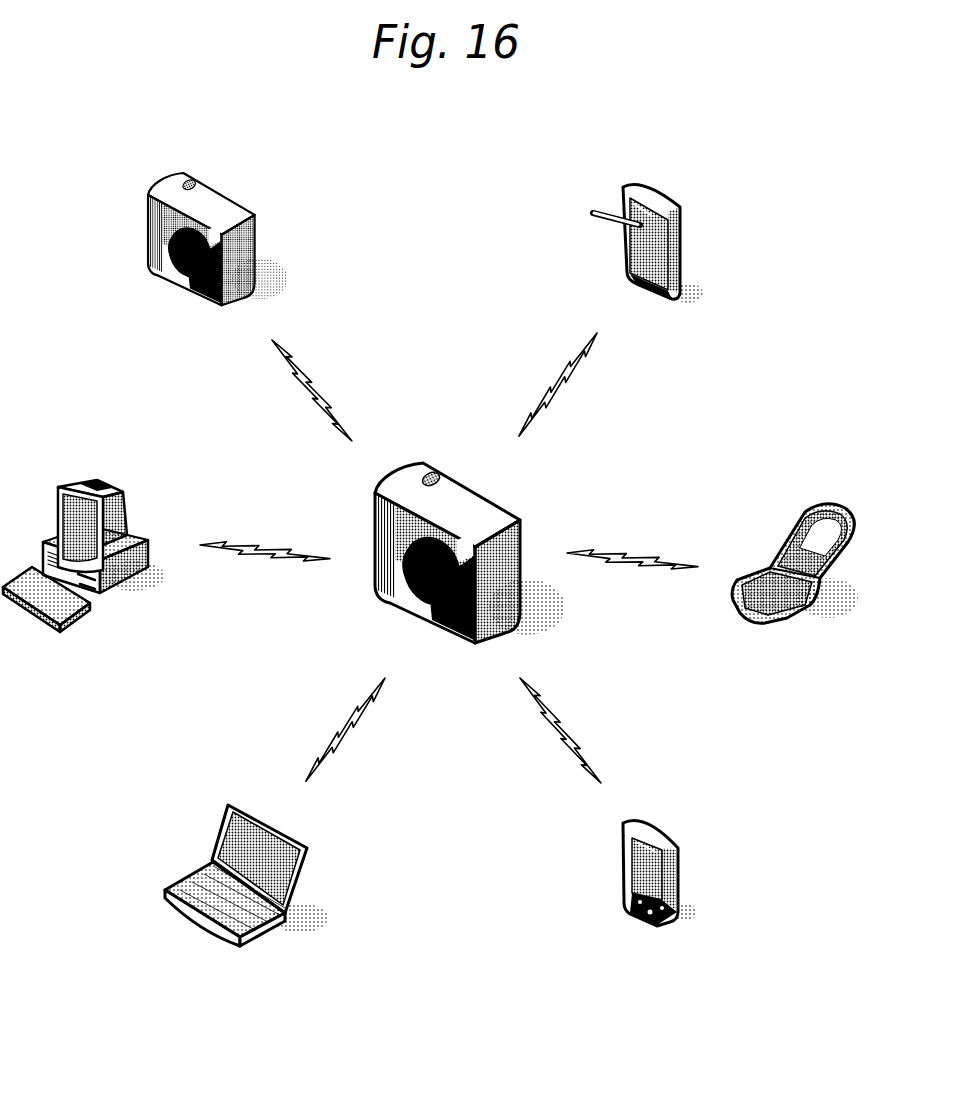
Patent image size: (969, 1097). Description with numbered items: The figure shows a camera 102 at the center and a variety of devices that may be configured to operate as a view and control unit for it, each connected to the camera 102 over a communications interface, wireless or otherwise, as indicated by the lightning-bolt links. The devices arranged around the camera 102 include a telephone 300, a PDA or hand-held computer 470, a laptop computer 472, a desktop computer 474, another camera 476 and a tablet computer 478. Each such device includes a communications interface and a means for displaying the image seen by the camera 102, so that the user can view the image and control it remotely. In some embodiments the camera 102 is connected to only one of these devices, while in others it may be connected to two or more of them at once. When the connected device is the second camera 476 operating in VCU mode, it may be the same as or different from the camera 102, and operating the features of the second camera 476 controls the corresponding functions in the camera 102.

The camera 102 is at (503, 515).
The second camera 476 is at (227, 203).
The tablet computer 478 is at (672, 202).
The desktop computer 474 is at (110, 492).
The telephone 300 is at (822, 512).
The laptop computer 472 is at (283, 837).
The PDA (hand-held computer) 470 is at (662, 837).